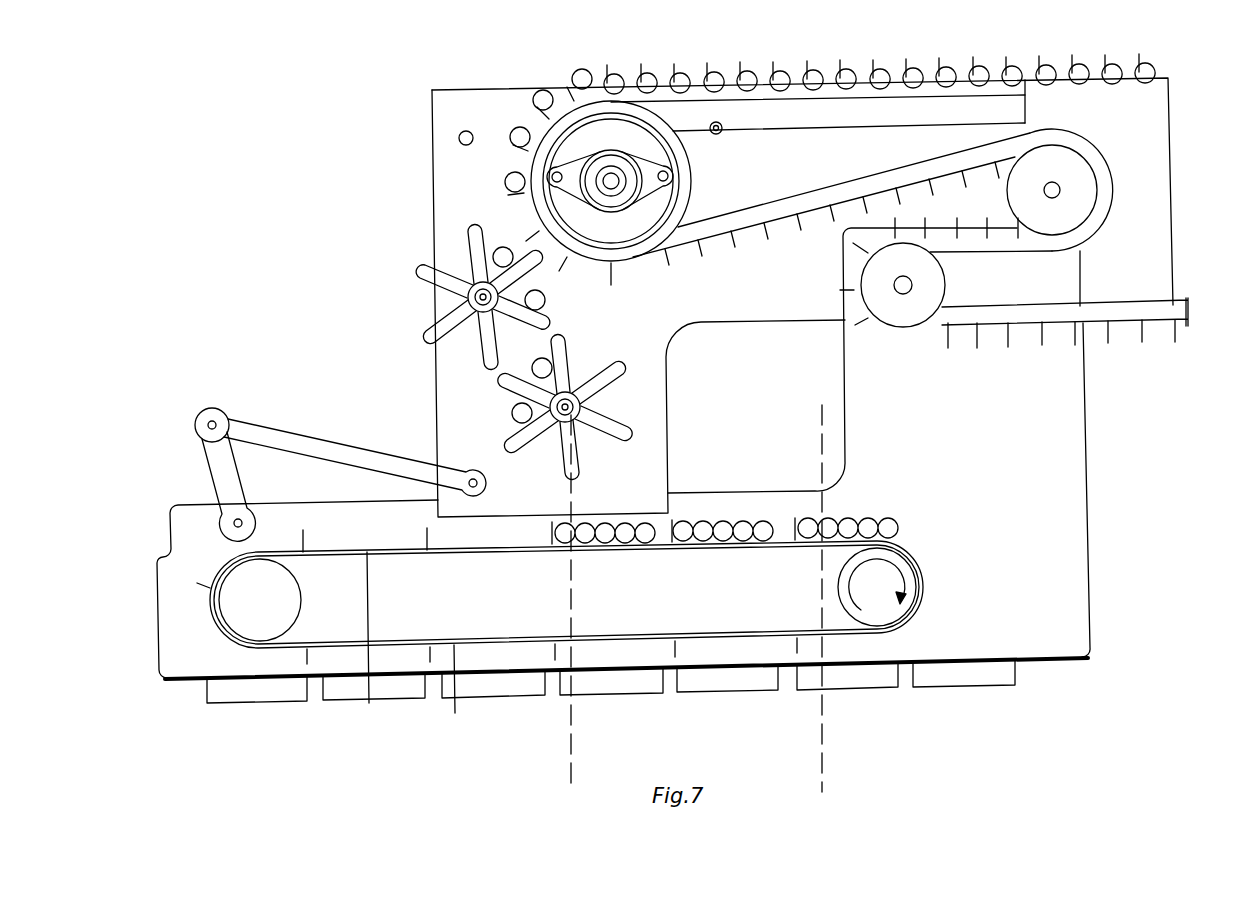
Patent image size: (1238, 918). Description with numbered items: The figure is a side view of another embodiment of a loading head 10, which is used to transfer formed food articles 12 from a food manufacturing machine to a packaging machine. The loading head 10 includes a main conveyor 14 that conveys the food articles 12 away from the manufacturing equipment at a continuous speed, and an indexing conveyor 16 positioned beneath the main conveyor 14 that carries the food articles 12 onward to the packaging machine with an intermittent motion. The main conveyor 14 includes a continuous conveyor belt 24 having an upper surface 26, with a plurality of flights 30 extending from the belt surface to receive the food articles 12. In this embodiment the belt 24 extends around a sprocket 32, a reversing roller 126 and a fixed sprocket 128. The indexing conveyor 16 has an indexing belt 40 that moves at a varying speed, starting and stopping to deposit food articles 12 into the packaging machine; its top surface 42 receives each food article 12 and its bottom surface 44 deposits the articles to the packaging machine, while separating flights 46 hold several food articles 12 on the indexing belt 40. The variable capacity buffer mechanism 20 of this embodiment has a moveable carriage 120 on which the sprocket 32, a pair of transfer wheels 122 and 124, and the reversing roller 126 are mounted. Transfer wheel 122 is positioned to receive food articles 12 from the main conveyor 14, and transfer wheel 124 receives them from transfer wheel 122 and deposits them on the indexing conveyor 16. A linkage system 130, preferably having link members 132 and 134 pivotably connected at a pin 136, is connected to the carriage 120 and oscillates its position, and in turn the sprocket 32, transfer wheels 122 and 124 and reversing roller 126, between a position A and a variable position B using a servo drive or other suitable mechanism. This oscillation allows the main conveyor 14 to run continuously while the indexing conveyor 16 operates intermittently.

The loading head 10 is at (345, 135).
The food articles 12 is at (572, 70).
The main conveyor 14 is at (869, 36).
The indexing conveyor 16 is at (232, 652).
The variable capacity buffer mechanism 20 is at (433, 430).
The continuous conveyor belt 24 is at (712, 95).
The upper surface 26 is at (799, 65).
The flights 30 is at (643, 68).
The sprocket 32 is at (663, 160).
The indexing belt 40 is at (370, 703).
The top surface 42 is at (350, 552).
The bottom surface 44 is at (455, 713).
The separating flights 46 is at (303, 537).
The moveable carriage 120 is at (780, 298).
The transfer wheel 122 is at (425, 268).
The transfer wheel 124 is at (507, 390).
The reversing roller 126 is at (1068, 163).
The fixed sprocket 128 is at (948, 280).
The linkage system 130 is at (190, 430).
The link member 132 is at (278, 432).
The link member 134 is at (207, 467).
The pin 136 is at (198, 413).